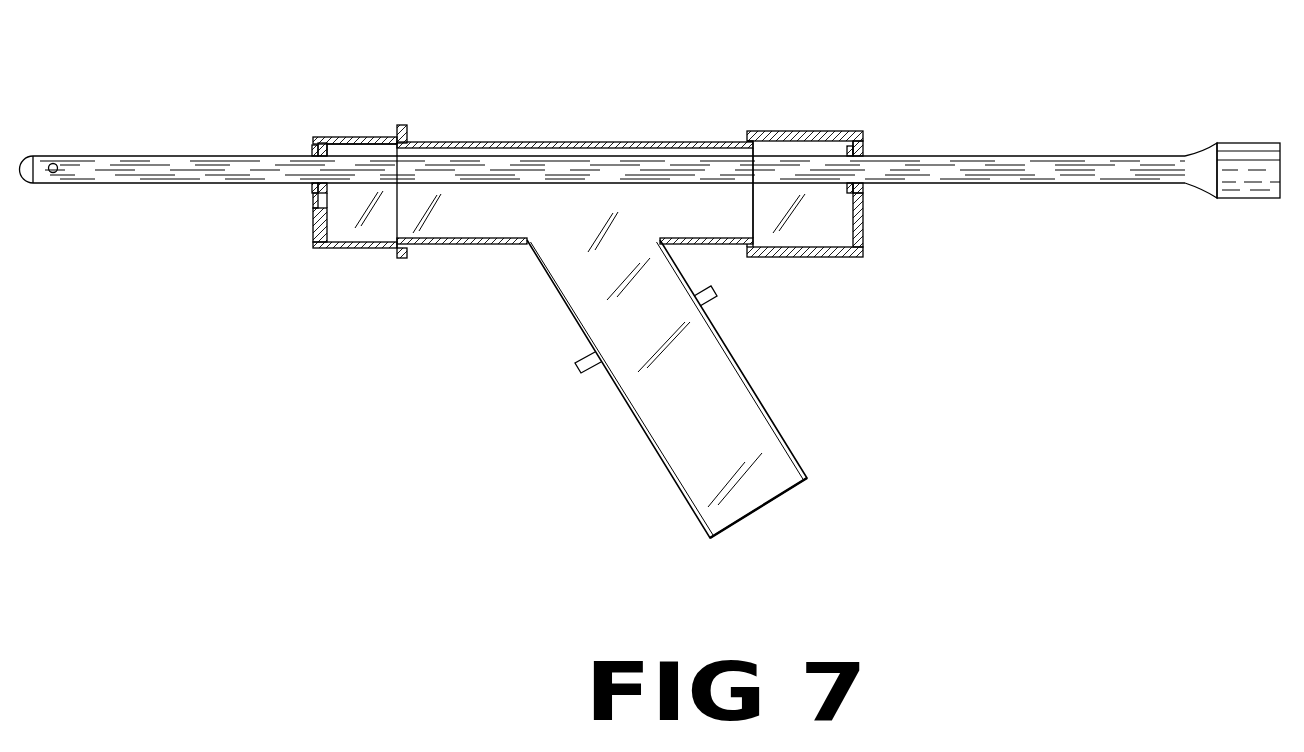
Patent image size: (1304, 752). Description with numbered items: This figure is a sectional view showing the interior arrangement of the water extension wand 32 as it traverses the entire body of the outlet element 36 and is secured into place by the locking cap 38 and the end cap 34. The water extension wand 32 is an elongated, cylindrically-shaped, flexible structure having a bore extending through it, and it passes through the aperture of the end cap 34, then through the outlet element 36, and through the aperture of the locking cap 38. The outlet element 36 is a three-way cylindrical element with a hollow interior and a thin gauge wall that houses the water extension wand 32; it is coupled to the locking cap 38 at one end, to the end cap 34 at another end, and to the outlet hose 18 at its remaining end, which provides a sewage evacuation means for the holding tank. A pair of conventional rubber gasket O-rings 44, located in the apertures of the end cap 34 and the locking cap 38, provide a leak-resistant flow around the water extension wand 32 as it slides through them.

The outlet hose 18 is at (773, 463).
The water extension wand 32 is at (278, 185).
The end cap 34 is at (806, 257).
The outlet element 36 is at (735, 141).
The locking cap 38 is at (355, 250).
The rubber gasket O-rings 44 is at (313, 137).